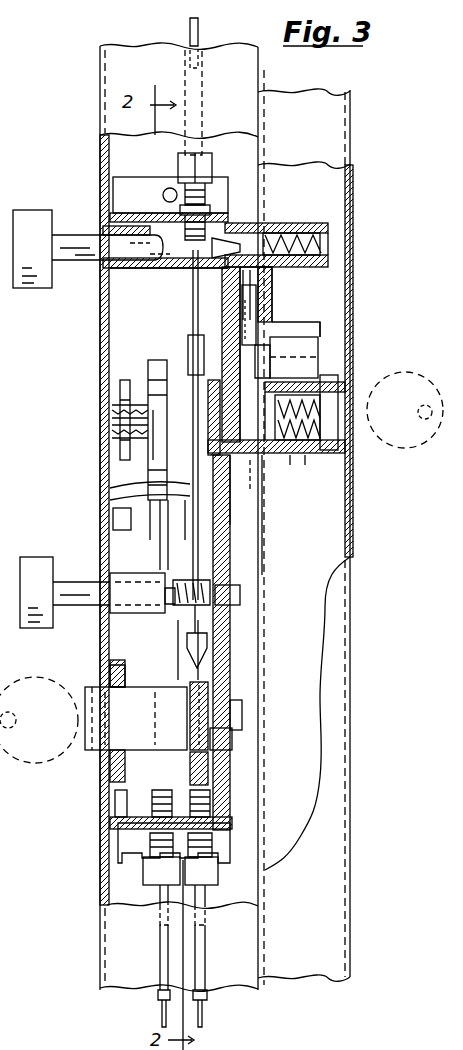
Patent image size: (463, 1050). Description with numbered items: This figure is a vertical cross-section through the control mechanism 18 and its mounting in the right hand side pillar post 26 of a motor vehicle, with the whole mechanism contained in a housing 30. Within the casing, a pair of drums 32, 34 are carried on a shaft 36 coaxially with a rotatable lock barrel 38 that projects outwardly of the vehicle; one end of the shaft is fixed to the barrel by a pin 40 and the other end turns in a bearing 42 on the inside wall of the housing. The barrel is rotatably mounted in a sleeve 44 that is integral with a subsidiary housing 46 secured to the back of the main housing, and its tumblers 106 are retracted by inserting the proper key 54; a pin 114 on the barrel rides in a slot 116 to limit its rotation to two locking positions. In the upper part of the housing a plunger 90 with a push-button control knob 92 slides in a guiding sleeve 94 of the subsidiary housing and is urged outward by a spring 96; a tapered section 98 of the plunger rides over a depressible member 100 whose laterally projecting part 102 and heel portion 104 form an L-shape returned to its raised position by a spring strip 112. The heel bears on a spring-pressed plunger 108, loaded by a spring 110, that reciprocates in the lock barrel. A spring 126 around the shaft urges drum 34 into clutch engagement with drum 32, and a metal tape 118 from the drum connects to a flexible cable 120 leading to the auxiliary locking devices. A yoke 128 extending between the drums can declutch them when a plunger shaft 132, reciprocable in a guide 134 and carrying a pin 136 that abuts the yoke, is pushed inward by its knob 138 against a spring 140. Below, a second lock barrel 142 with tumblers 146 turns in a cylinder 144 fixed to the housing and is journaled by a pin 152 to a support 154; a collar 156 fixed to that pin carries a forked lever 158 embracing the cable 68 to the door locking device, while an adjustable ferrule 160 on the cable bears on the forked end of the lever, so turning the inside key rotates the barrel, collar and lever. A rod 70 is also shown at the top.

The control mechanism 18 is at (140, 24).
The push rod 70 is at (200, 40).
The right hand side pillar post 26 is at (295, 111).
The manual control knob 92 is at (22, 216).
The plunger 90 is at (66, 237).
The sleeve 94 is at (128, 265).
The tapered section 98 is at (238, 239).
The spring 96 is at (300, 230).
The subsidiary housing 46 is at (272, 292).
The depressible member 100 is at (257, 307).
The spring strip 112 is at (328, 332).
The laterally projecting part 102 is at (321, 340).
The heel portion 104 is at (318, 352).
The tumblers 106 is at (336, 372).
The slot 116 is at (342, 410).
The pin 114 is at (343, 443).
The key 54 is at (425, 453).
The drum 32 is at (188, 343).
The drum 34 is at (162, 368).
The spring 126 is at (123, 388).
The bearing 42 is at (112, 408).
The shaft 36 is at (112, 432).
The yoke 128 is at (120, 485).
The metal tape 118 is at (115, 494).
The pin 40 is at (235, 457).
The spring-pressed plunger 108 is at (272, 458).
The lock barrel 38 is at (298, 458).
The sleeve 44 is at (305, 457).
The spring 110 is at (270, 487).
The knob 138 is at (33, 576).
The plunger shaft 132 is at (78, 593).
The guide 134 is at (138, 613).
The pin 136 is at (170, 590).
The spring 140 is at (240, 601).
The adjustable ferrule 160 is at (207, 645).
The tumblers 146 is at (110, 666).
The lock barrel 142 is at (120, 720).
The cylinder 144 is at (120, 745).
The collar 156 is at (213, 692).
The pin 152 is at (235, 710).
The support 154 is at (235, 737).
The forked lever 158 is at (208, 763).
The housing 30 is at (118, 835).
The flexible cable 120 is at (162, 1013).
The cable 68 is at (205, 1013).